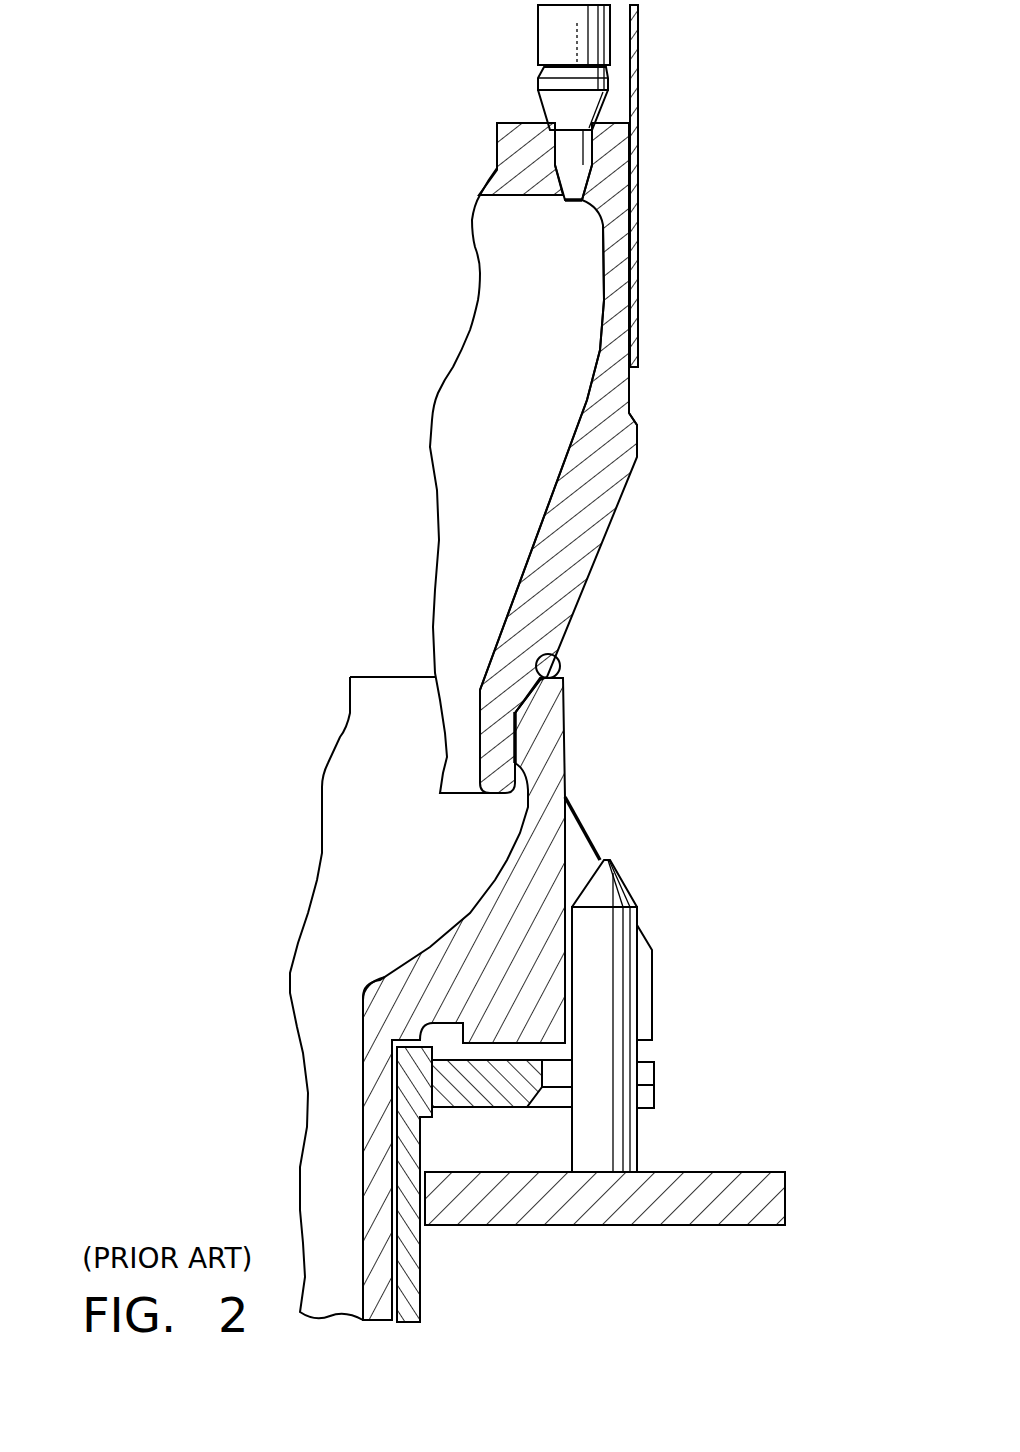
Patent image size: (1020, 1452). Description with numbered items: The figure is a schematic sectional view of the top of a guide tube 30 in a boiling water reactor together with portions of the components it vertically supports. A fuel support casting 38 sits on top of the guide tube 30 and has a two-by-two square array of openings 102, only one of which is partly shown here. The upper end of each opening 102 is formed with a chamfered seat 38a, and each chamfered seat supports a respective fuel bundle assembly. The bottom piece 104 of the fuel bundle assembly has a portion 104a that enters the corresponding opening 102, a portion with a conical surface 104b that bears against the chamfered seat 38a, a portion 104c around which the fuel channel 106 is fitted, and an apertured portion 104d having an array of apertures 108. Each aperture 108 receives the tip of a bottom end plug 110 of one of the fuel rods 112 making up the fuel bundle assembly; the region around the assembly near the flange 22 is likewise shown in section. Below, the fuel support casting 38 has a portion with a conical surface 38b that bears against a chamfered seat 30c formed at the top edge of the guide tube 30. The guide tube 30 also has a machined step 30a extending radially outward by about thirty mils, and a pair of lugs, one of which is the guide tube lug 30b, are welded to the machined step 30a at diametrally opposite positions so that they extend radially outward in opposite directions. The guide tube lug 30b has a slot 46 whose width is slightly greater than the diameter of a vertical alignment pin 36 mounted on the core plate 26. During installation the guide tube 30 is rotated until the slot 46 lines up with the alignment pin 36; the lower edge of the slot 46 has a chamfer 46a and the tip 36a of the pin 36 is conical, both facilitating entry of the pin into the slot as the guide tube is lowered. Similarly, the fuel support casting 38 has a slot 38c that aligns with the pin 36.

The flange 22 is at (628, 486).
The core plate 26 is at (700, 1226).
The guide tube 30 is at (399, 1175).
The machined step 30a is at (425, 1119).
The guide tube lug 30b is at (508, 1091).
The chamfered seat 30c is at (405, 1047).
The vertical alignment pin 36 is at (651, 1011).
The tip of pin 36a is at (621, 876).
The fuel support casting 38 is at (480, 999).
The chamfered seat 38a is at (556, 655).
The conical surface 38b is at (364, 1002).
The slot 38c is at (656, 976).
The slot 46 is at (592, 1068).
The chamfer 46a is at (650, 1097).
The opening 102 is at (498, 738).
The bottom piece 104 is at (548, 458).
The portion 104a is at (557, 473).
The conical surface 104b is at (559, 728).
The portion 104c is at (615, 252).
The apertured portion 104d is at (502, 157).
The fuel channel 106 is at (640, 278).
The aperture 108 is at (563, 202).
The bottom end plug 110 is at (585, 157).
The fuel rod 112 is at (525, 28).